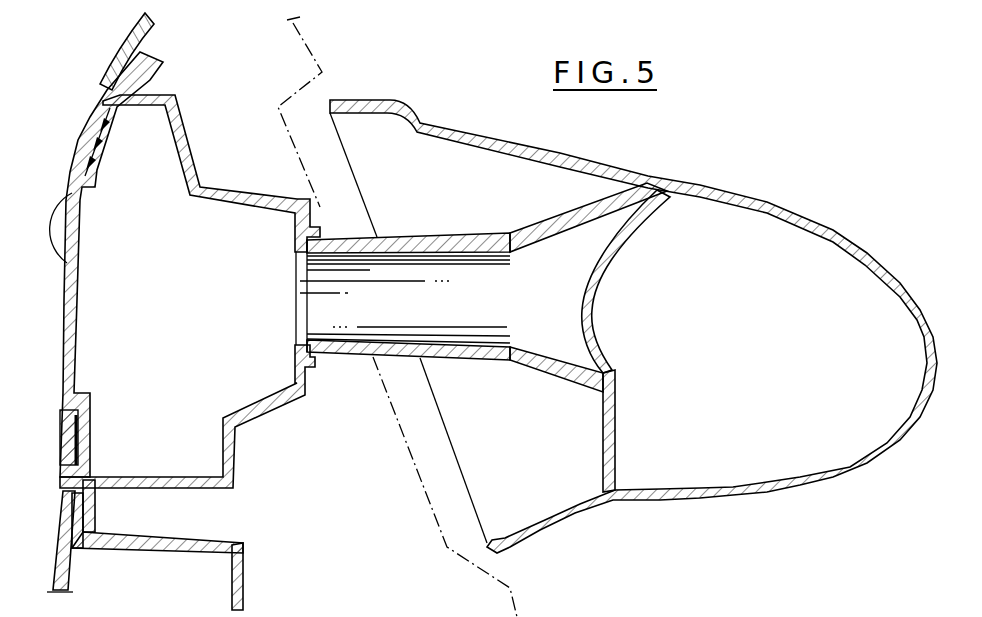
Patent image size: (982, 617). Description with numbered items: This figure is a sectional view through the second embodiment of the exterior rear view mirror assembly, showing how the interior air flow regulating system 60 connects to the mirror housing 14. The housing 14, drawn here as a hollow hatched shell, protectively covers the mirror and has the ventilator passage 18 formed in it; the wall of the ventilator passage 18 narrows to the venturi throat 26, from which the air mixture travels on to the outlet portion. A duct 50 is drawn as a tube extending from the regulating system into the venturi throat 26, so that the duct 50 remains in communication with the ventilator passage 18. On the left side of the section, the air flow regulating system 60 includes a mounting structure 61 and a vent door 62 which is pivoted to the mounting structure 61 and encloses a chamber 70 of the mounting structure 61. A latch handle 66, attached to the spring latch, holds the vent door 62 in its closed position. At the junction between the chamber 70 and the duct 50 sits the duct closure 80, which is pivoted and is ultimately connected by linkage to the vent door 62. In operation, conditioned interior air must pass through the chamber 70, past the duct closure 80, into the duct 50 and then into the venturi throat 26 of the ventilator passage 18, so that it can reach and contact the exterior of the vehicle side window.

The housing 14 is at (633, 326).
The ventilator passage 18 is at (598, 237).
The venturi throat 26 is at (558, 323).
The duct 50 is at (405, 296).
The interior air flow regulating system 60 is at (72, 110).
The mounting structure 61 is at (63, 437).
The vent door 62 is at (78, 287).
The latch handle 66 is at (60, 227).
The chamber 70 is at (190, 332).
The duct closure 80 is at (297, 300).